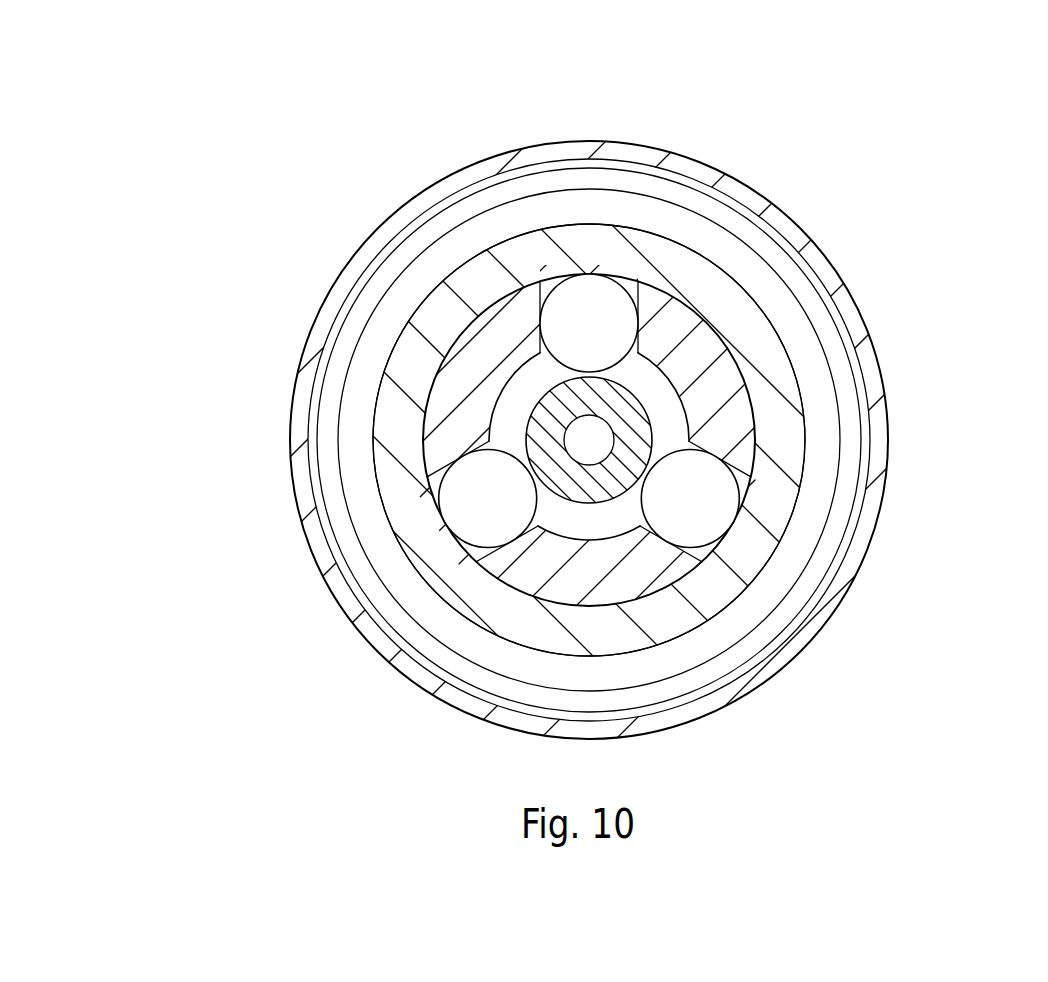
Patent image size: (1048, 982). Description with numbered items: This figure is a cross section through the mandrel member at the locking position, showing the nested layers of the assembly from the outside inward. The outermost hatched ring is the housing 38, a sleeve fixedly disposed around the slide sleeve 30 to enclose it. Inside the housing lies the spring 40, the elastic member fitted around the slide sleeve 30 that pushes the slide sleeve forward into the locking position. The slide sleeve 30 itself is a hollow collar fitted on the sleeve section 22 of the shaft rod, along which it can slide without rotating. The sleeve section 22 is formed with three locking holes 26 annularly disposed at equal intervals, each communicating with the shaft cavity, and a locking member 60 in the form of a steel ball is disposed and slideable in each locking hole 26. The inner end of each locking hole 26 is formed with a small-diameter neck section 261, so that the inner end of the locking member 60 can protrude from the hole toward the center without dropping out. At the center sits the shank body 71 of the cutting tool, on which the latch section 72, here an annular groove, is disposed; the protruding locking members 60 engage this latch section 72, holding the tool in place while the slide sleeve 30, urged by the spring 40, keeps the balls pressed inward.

The sleeve section 22 is at (465, 388).
The locking hole 26 is at (520, 287).
The small-diameter neck section 261 is at (540, 350).
The slide sleeve 30 is at (676, 258).
The housing 38 is at (754, 198).
The spring 40 is at (418, 638).
The locking member 60 is at (588, 322).
The shank body 71 is at (622, 403).
The latch section 72 is at (667, 415).